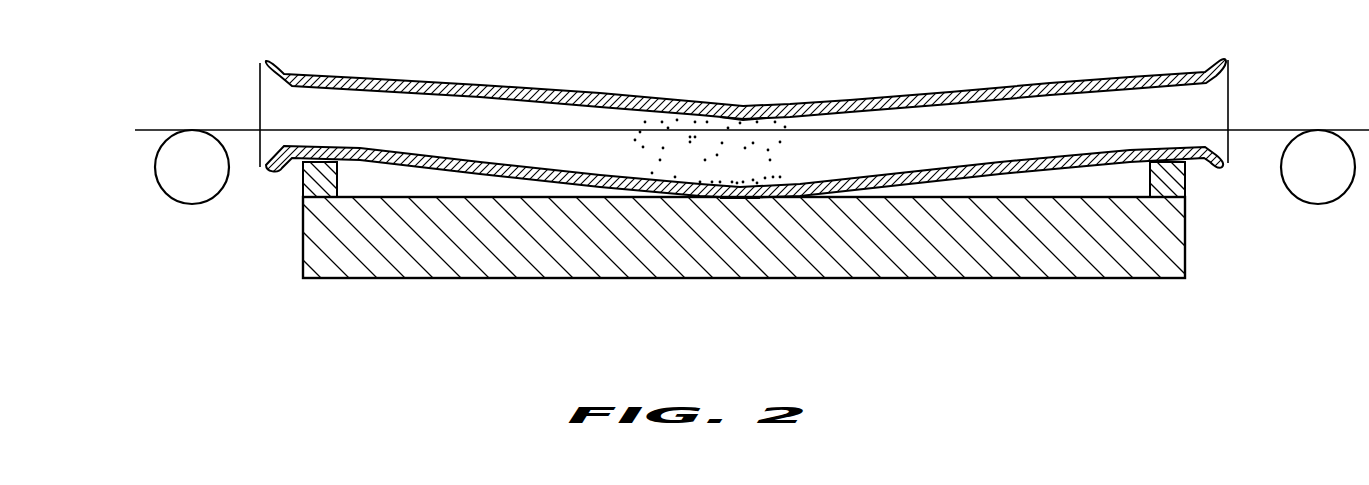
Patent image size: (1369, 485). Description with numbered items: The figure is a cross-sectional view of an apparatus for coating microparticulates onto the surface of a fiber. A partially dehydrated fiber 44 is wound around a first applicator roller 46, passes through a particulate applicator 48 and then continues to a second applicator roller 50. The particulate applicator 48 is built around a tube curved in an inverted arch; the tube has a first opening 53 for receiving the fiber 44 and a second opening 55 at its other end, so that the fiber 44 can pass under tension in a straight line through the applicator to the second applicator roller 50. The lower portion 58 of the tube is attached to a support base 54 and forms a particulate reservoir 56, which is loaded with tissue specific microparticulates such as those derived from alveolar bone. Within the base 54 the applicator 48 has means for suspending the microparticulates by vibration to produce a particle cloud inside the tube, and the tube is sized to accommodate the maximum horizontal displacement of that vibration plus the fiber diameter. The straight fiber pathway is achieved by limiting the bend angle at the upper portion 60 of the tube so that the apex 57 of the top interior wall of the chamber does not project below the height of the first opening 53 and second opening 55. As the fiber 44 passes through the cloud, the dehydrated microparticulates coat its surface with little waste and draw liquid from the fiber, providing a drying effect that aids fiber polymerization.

The partially dehydrated fiber 44 is at (237, 128).
The first applicator roller 46 is at (183, 204).
The particulate applicator 48 is at (912, 93).
The second applicator roller 50 is at (1325, 204).
The first opening 53 is at (258, 147).
The support base 54 is at (411, 279).
The second opening 55 is at (1232, 137).
The particulate reservoir 56 is at (695, 181).
The apex 57 is at (738, 117).
The lower portion 58 is at (739, 183).
The upper portion 60 is at (760, 116).